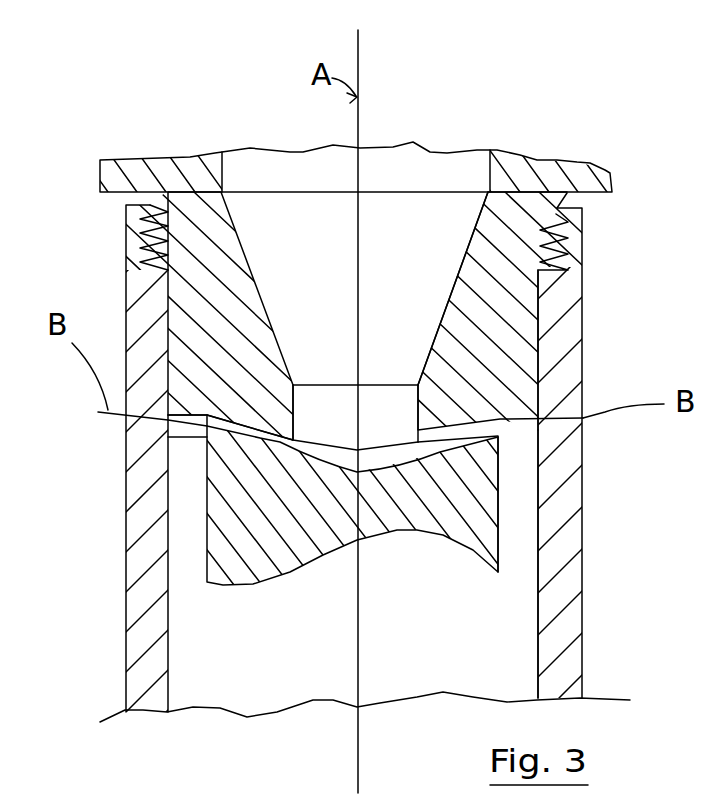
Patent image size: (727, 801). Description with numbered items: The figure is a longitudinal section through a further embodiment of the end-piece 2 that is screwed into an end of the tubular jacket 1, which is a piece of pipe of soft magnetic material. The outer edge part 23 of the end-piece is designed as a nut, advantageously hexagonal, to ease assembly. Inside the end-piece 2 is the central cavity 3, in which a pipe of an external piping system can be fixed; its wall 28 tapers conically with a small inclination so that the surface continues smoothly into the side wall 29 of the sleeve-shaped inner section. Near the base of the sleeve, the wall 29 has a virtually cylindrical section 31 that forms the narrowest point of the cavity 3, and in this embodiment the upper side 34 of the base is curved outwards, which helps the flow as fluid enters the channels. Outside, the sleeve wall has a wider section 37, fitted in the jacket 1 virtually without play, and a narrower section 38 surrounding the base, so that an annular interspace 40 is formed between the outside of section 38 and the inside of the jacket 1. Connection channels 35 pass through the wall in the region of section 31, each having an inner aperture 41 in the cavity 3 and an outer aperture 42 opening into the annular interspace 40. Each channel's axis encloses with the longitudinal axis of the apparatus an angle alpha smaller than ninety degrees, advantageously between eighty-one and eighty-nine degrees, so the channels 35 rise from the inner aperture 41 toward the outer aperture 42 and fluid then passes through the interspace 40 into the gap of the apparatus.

The jacket 1 is at (126, 612).
The end-piece 2 is at (432, 58).
The central cavity 3 is at (403, 254).
The outer edge part 23 is at (557, 175).
The conical wall of the opening 28 is at (480, 212).
The side wall of the sleeve 29 is at (264, 268).
The cylindrical section 31 is at (418, 402).
The inside surface of the base 34 is at (382, 472).
The connection channels 35 is at (252, 447).
The wider section of the sleeve wall 37 is at (515, 320).
The narrower section of the sleeve wall 38 is at (500, 494).
The annular interspace 40 is at (520, 557).
The inner aperture 41 is at (297, 438).
The outer aperture 42 is at (247, 441).